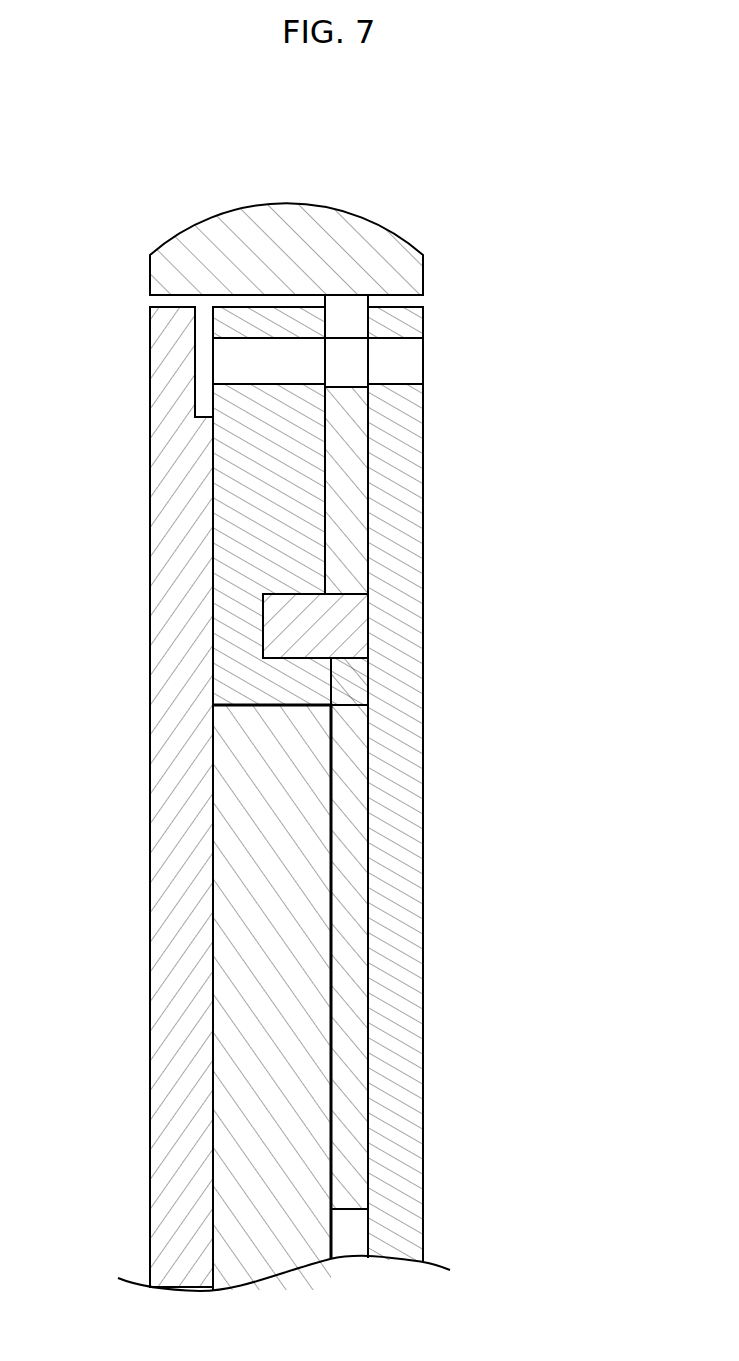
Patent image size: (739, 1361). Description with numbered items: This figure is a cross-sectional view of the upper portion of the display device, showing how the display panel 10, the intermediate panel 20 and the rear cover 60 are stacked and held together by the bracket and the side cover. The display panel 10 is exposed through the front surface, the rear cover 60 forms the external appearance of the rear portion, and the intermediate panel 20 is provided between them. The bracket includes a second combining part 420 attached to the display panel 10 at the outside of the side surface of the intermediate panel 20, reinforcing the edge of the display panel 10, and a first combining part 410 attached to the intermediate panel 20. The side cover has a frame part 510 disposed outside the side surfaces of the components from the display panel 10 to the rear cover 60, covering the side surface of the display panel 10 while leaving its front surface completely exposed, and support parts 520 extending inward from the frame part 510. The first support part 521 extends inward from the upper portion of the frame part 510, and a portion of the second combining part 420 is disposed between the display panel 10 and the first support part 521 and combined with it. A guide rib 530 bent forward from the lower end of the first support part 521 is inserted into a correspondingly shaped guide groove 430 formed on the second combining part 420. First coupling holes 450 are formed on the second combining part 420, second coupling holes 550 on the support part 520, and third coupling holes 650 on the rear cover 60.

The display panel 10 is at (180, 792).
The intermediate panel 20 is at (260, 997).
The rear cover 60 is at (405, 1092).
The first combining part 410 is at (352, 852).
The second combining part 420 is at (252, 462).
The guide groove 430 is at (263, 630).
The first coupling holes 450 is at (273, 355).
The frame part 510 is at (278, 217).
The support parts 520 is at (352, 495).
The first support part 521 is at (449, 490).
The guide rib 530 is at (300, 617).
The second coupling holes 550 is at (363, 354).
The third coupling holes 650 is at (405, 354).